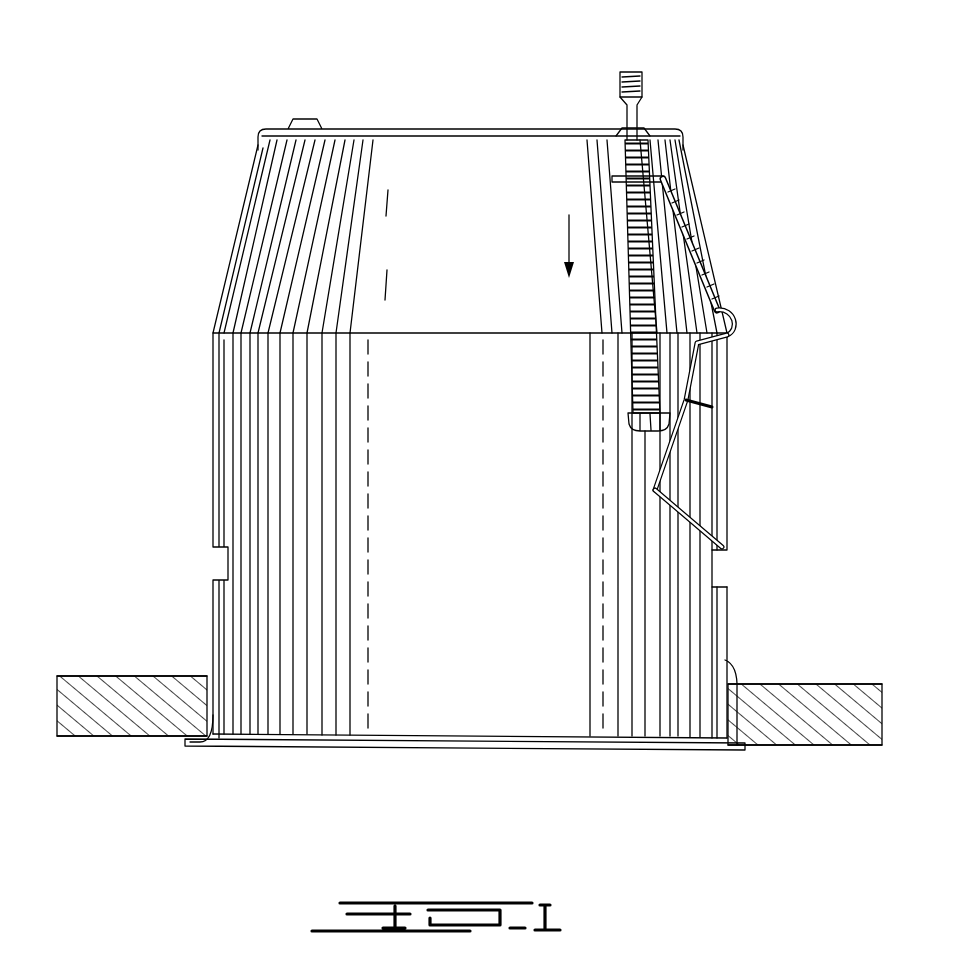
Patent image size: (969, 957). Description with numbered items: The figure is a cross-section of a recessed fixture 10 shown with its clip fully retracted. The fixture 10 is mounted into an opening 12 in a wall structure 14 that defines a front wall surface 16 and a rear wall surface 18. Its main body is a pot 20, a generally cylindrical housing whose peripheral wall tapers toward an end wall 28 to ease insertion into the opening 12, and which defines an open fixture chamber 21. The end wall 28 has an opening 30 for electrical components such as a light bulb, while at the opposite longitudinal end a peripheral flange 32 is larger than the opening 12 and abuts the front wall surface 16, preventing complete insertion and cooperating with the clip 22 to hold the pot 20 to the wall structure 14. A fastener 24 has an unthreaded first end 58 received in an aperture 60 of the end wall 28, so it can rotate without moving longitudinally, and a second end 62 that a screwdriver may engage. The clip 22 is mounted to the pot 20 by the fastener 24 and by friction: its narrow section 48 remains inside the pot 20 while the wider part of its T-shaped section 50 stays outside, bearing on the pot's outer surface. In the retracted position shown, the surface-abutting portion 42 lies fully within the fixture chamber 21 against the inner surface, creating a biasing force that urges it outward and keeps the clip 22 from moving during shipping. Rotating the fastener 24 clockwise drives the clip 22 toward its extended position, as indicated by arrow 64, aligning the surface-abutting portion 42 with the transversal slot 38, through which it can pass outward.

The recessed fixture 10 is at (150, 422).
The opening 12 is at (727, 665).
The wall structure 14 is at (855, 708).
The front wall surface 16 is at (815, 745).
The rear wall surface 18 is at (822, 684).
The pot 20 is at (200, 325).
The fixture chamber 21 is at (491, 655).
The clip 22 is at (744, 318).
The fastener 24 is at (650, 205).
The end wall 28 is at (405, 130).
The opening 30 is at (464, 142).
The peripheral flange 32 is at (742, 749).
The transversal slot 38 is at (722, 568).
The surface-abutting portion 42 is at (683, 513).
The narrow section 48 is at (700, 230).
The T-shaped section 50 is at (728, 316).
The first end 58 is at (642, 110).
The aperture 60 is at (650, 132).
The second end 62 is at (628, 423).
The arrow 64 is at (568, 232).